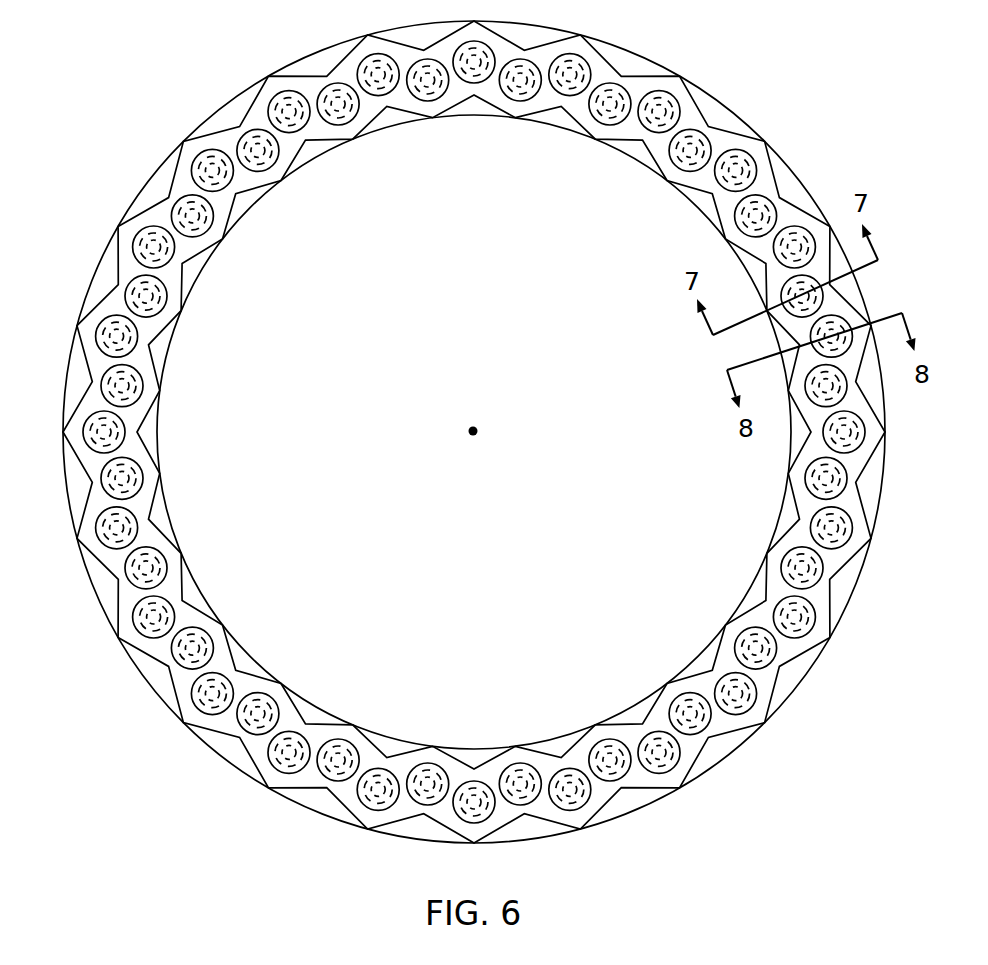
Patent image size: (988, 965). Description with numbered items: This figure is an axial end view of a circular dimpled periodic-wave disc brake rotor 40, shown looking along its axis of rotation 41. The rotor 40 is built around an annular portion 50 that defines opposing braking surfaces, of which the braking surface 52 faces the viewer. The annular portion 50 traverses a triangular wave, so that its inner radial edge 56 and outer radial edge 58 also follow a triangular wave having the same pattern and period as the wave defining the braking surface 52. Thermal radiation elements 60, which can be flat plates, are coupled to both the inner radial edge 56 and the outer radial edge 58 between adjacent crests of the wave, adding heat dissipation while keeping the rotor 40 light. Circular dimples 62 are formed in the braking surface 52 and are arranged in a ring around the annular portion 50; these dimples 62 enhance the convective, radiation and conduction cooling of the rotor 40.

The disc brake rotor 40 is at (118, 142).
The axis of rotation 41 is at (480, 410).
The annular portion 50 is at (182, 552).
The braking surface 52 is at (140, 363).
The inner radial edge 56 is at (198, 605).
The outer radial edge 58 is at (220, 755).
The thermal radiation element 60 is at (308, 710).
The dimple 62 is at (163, 250).